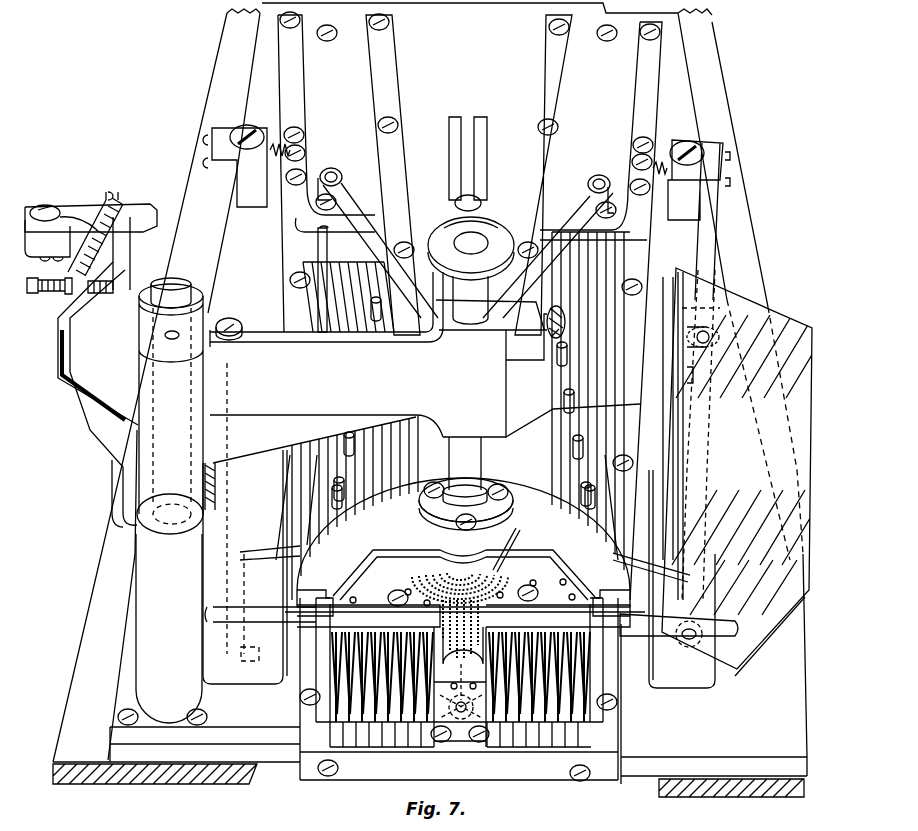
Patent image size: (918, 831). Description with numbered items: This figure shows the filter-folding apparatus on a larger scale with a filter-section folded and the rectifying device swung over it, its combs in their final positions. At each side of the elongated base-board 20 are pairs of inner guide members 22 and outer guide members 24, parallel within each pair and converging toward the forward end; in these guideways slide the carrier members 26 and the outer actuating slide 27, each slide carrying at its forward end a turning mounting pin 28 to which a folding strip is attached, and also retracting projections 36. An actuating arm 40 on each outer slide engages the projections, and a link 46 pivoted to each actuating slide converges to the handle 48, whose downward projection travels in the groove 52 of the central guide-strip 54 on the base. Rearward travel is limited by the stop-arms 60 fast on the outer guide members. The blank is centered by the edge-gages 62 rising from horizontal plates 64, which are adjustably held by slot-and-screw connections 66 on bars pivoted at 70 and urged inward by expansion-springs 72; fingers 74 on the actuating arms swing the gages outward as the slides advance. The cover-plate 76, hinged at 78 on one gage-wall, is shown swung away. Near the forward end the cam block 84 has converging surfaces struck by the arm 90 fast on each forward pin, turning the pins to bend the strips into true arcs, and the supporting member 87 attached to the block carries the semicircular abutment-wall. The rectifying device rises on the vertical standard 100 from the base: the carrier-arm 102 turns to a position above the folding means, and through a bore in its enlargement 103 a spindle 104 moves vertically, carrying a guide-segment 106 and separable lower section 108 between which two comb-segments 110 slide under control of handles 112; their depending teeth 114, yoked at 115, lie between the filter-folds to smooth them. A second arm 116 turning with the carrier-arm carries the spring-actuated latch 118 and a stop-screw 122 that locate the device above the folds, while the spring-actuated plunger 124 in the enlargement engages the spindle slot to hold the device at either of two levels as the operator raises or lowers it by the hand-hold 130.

The base-board 20 is at (737, 771).
The inner guide members 22 is at (543, 50).
The outer guide members 24 is at (665, 88).
The carrier members 26 is at (612, 330).
The actuating slide 27 is at (617, 250).
The mounting pins 28 is at (563, 714).
The retracting projections 36 is at (583, 444).
The actuating arm 40 is at (608, 505).
The links 46 is at (590, 192).
The handle 48 is at (479, 203).
The groove 52 is at (466, 139).
The central guide-strip 54 is at (488, 160).
The stop-arms 60 is at (647, 230).
The edge-gages 62 is at (673, 284).
The horizontal plates 64 is at (679, 674).
The slot-and-screw connections 66 is at (732, 645).
The pivot 70 is at (695, 145).
The expansion-springs 72 is at (661, 160).
The fingers 74 is at (600, 560).
The cover-plate 76 is at (782, 322).
The hinge 78 is at (687, 375).
The cam block 84 is at (460, 687).
The supporting member 87 is at (461, 741).
The arm 90 is at (461, 704).
The vertical standard 100 is at (142, 591).
The carrier-arm 102 is at (326, 354).
The enlargement 103 is at (459, 379).
The spindle 104 is at (476, 455).
The guide-segment 106 is at (445, 508).
The separable lower section 108 is at (620, 600).
The comb-segments 110 is at (540, 563).
The handles 112 is at (727, 626).
The depending teeth 114 is at (505, 651).
The yoke 115 is at (540, 620).
The second arm 116 is at (80, 404).
The spring-actuated latch 118 is at (143, 207).
The stop-screw 122 is at (65, 294).
The spring-actuated plunger 124 is at (548, 335).
The hand-hold 130 is at (443, 230).